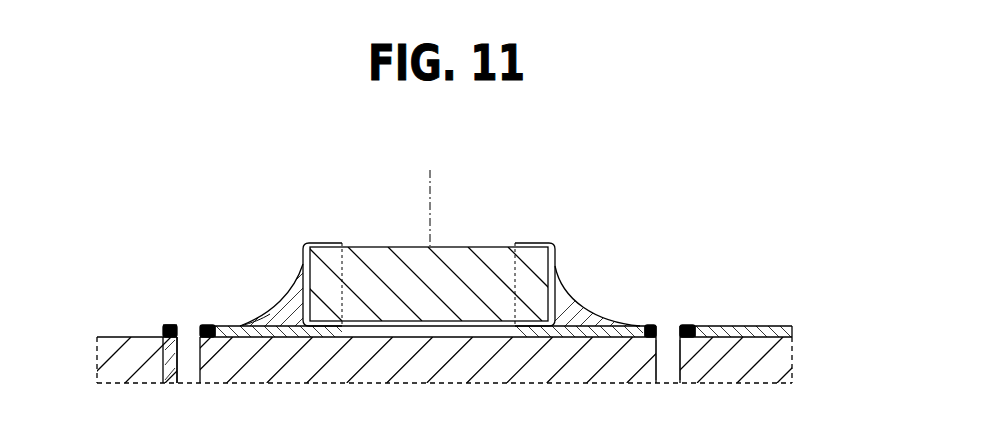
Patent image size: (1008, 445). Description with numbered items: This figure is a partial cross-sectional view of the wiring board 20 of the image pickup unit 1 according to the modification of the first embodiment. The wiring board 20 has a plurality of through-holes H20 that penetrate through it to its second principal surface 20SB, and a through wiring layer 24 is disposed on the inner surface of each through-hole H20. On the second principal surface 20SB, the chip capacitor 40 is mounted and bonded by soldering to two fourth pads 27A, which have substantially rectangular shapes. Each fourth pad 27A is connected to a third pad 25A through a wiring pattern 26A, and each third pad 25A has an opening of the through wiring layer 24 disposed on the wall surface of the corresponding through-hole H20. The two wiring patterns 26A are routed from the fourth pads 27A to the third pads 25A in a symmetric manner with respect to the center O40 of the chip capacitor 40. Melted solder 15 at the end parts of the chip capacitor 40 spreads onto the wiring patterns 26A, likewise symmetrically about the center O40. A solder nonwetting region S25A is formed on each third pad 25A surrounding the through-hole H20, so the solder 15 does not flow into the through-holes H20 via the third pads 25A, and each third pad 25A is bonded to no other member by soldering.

The image pickup unit 1 is at (745, 179).
The solder 15 is at (267, 323).
The wiring board 20 is at (793, 364).
The second principal surface 20SB is at (751, 321).
The through-hole H20 is at (665, 320).
The through wiring layer 24 is at (176, 362).
The third pad 25A is at (162, 326).
The solder nonwetting region S25A is at (170, 325).
The wiring pattern 26A is at (230, 325).
The fourth pad 27A is at (291, 321).
The chip capacitor 40 is at (470, 245).
The center of the chip capacitor O40 is at (430, 192).